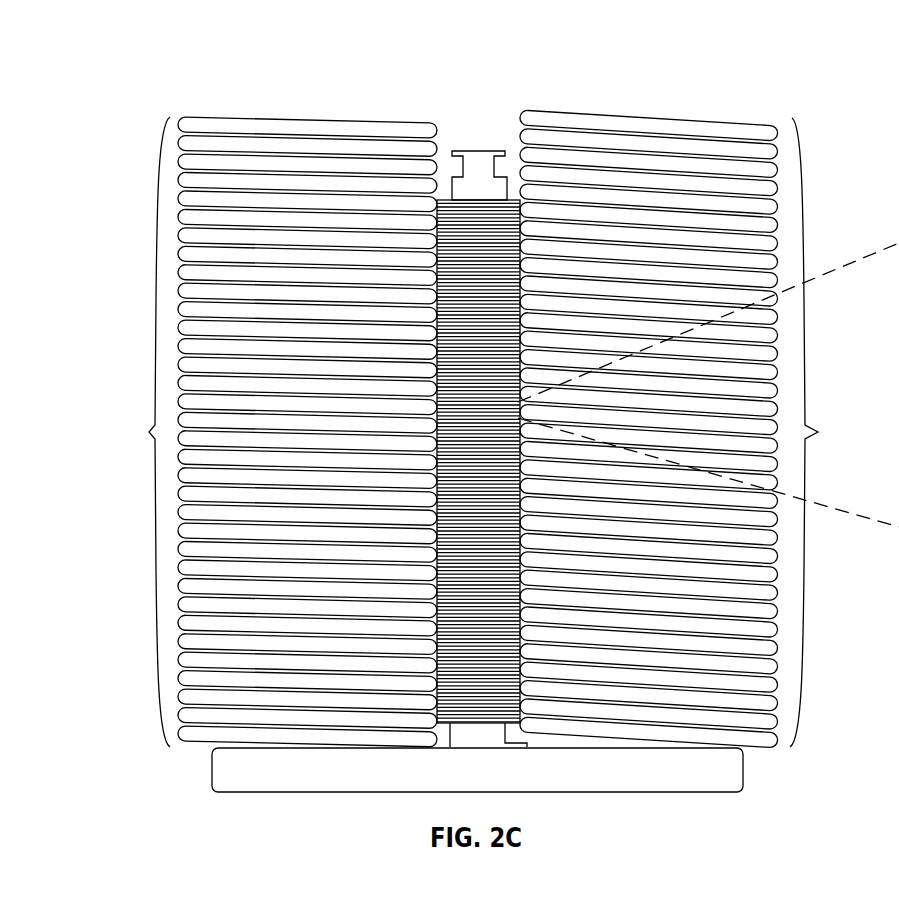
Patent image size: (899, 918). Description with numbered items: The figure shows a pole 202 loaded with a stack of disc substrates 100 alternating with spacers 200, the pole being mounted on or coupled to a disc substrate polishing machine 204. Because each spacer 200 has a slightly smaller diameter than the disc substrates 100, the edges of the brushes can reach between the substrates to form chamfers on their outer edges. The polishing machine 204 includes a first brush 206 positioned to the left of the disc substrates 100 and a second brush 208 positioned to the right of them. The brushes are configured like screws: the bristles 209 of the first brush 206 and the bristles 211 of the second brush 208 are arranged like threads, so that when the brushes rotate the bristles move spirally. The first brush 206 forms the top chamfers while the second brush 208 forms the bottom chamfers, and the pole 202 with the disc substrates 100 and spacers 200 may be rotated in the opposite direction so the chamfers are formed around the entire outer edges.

The disc substrate 100 is at (522, 206).
The spacer 200 is at (522, 205).
The pole 202 is at (480, 151).
The disc substrate polishing machine 204 is at (193, 46).
The first brush 206 is at (266, 405).
The second brush 208 is at (694, 407).
The bristles 209 is at (247, 150).
The bristles 211 is at (686, 144).